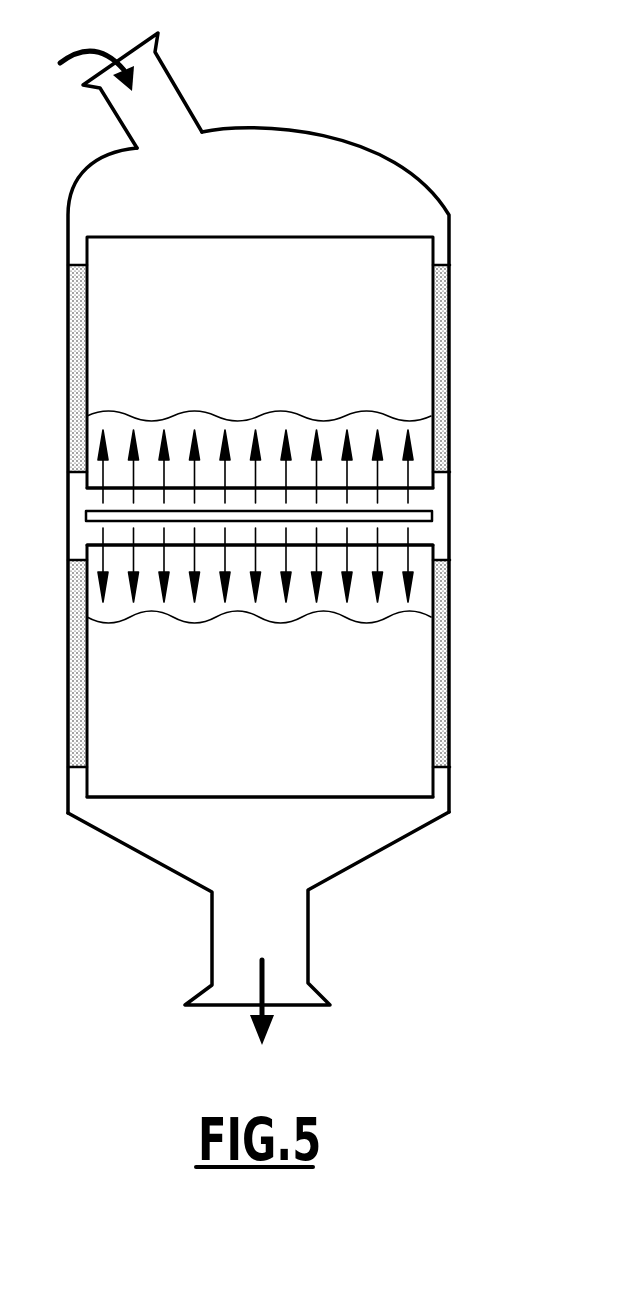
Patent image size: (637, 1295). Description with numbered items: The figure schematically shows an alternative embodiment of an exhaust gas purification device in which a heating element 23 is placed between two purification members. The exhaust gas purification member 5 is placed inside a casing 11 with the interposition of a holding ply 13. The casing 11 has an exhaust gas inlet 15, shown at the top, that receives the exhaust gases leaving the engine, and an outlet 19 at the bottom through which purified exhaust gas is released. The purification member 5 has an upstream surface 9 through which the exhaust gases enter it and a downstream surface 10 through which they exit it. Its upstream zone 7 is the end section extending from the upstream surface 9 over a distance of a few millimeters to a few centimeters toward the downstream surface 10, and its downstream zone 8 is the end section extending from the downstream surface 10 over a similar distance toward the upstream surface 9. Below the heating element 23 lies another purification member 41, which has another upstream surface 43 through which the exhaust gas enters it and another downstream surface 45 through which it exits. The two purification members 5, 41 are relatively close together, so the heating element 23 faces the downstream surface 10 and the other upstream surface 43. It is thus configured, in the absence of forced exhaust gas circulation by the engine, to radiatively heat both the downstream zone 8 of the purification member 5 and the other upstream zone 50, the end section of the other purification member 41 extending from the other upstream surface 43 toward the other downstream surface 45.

The exhaust gas purification member 5 is at (388, 290).
The upstream zone 7 is at (420, 263).
The downstream zone 8 is at (418, 440).
The upstream surface 9 is at (400, 237).
The downstream surface 10 is at (108, 493).
The casing 11 is at (440, 395).
The holding ply 13 is at (77, 353).
The exhaust gas inlet 15 is at (178, 86).
The outlet 19 is at (310, 955).
The heating element 23 is at (433, 510).
The other purification member 41 is at (395, 740).
The other upstream surface 43 is at (98, 541).
The other downstream surface 45 is at (121, 800).
The other upstream zone 50 is at (422, 583).